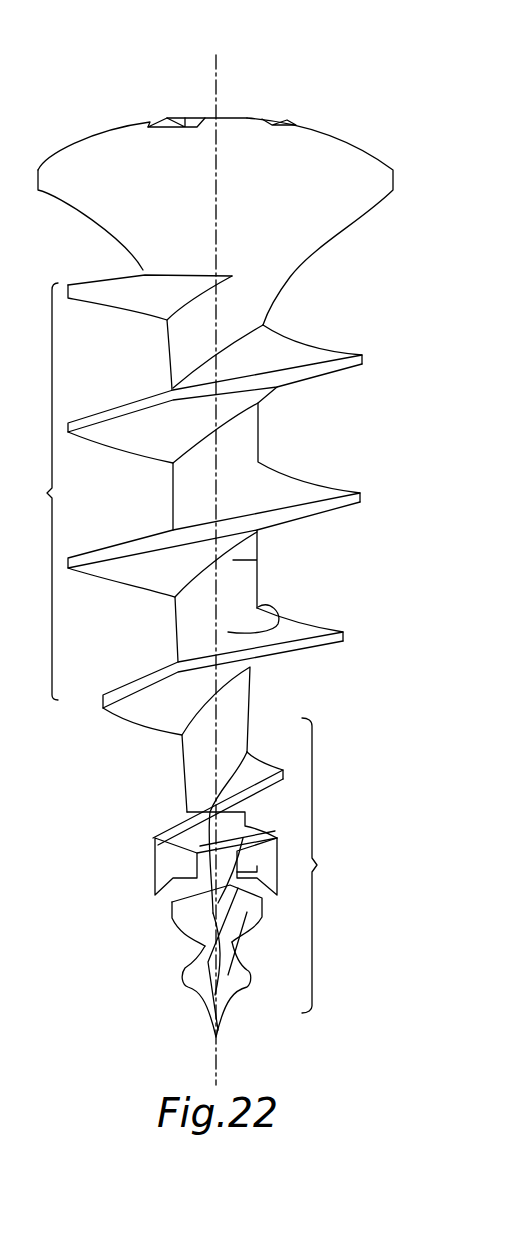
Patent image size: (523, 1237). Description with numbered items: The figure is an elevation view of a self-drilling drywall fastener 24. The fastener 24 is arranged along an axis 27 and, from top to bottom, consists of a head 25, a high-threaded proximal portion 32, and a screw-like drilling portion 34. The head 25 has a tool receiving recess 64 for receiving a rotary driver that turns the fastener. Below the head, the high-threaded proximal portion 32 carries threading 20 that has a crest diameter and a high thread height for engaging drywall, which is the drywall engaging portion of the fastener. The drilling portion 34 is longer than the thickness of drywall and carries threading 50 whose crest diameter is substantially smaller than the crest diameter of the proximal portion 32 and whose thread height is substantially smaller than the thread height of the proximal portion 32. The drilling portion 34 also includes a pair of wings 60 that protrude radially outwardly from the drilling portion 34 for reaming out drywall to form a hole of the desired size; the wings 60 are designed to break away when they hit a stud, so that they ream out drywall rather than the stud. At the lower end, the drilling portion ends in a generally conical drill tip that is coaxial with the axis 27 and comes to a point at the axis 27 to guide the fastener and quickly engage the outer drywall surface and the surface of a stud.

The self-drilling drywall fastener 24 is at (224, 545).
The head 25 is at (235, 166).
The tool receiving recess 64 is at (192, 117).
The axis 27 is at (217, 75).
The threading 20 is at (362, 493).
The high-threaded proximal portion 32 is at (36, 491).
The threading 50 is at (287, 770).
The drilling portion 34 is at (216, 877).
The wings 60 is at (155, 875).